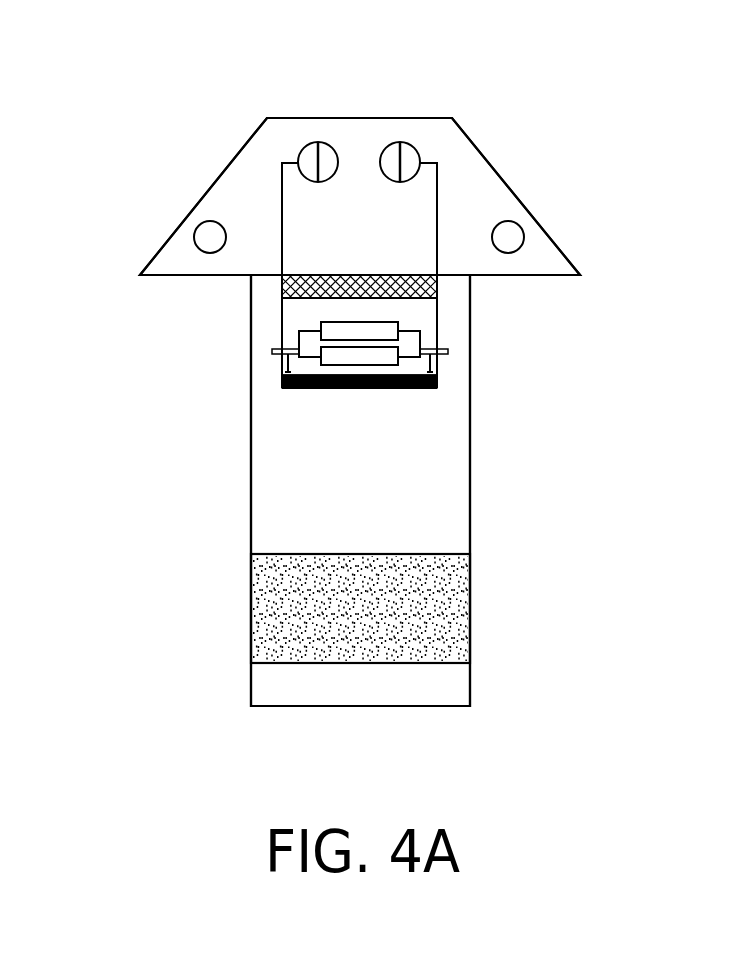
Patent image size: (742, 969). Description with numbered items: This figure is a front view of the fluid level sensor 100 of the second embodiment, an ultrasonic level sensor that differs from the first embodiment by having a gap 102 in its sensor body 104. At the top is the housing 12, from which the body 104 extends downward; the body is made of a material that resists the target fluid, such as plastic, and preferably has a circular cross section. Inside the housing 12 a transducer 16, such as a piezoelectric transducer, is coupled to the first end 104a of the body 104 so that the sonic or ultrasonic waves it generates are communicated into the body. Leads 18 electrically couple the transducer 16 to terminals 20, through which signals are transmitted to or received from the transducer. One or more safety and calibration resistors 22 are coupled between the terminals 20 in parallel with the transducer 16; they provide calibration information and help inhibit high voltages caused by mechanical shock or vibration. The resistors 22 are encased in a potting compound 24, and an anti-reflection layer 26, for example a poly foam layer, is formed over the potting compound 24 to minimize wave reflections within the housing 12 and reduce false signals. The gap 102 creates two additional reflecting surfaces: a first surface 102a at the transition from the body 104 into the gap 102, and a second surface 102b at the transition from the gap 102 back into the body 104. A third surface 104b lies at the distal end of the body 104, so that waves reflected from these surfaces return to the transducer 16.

The fluid level sensor 100 is at (547, 133).
The housing 12 is at (237, 174).
The leads 18 is at (437, 173).
The terminals 20 is at (300, 152).
The anti-reflection layer 26 is at (398, 275).
The potting compound 24 is at (300, 309).
The safety/calibration resistors 22 is at (385, 322).
The transducer 16 is at (403, 388).
The first end of body 104a is at (323, 388).
The sensor body 104 is at (305, 483).
The gap 102 is at (273, 620).
The first surface 102a is at (428, 554).
The second surface 102b is at (420, 663).
The third surface 104b is at (300, 705).